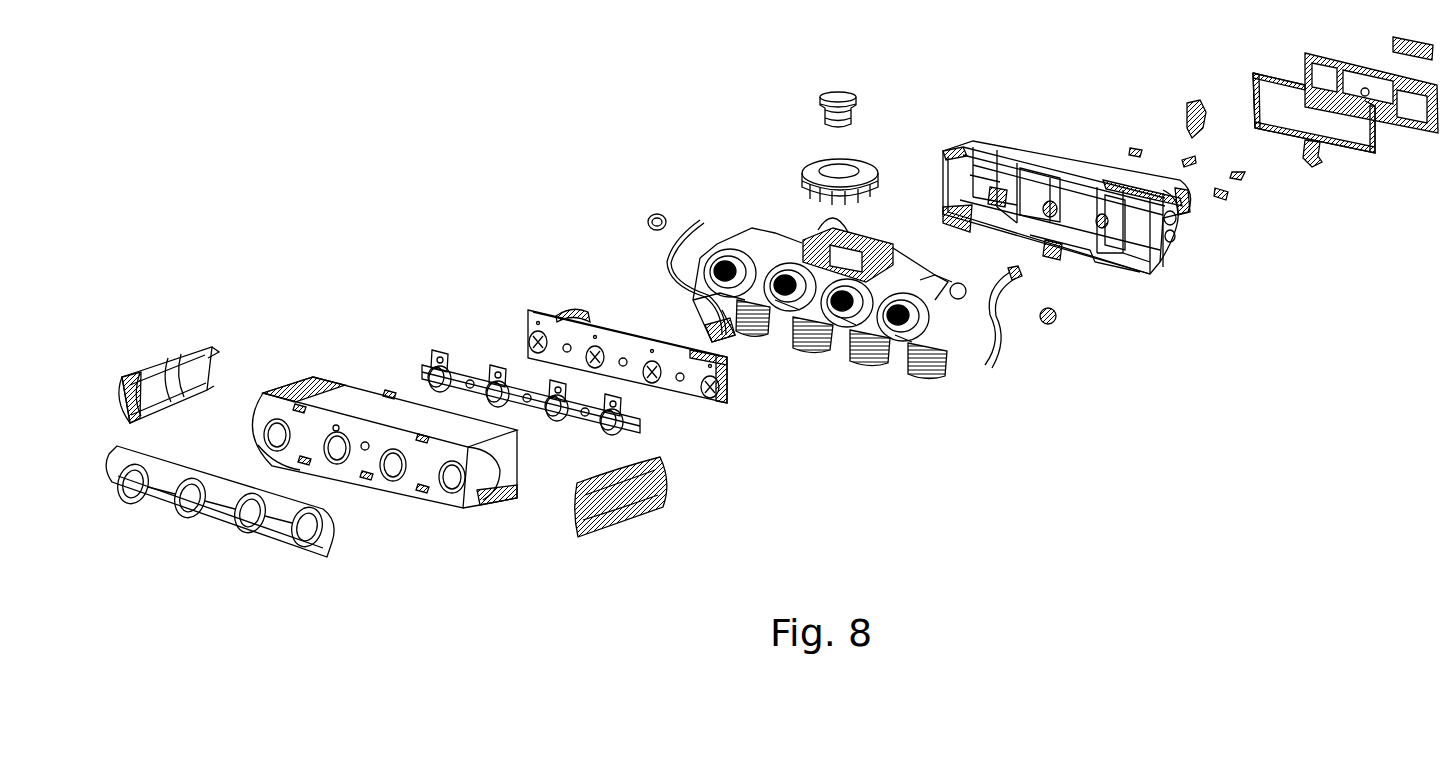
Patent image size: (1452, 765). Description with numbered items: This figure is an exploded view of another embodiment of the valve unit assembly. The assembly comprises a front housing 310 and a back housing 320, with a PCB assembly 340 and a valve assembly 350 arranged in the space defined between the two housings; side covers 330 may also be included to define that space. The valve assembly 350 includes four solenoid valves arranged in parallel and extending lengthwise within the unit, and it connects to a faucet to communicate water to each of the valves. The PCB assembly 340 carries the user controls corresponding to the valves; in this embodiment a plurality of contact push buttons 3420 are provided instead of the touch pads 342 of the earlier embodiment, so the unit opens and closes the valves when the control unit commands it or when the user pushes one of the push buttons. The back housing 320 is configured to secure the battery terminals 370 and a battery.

The front housing 310 is at (393, 487).
The back housing 320 is at (1008, 148).
The side covers 330 is at (163, 362).
The PCB assembly 340 is at (523, 320).
The PCB touch pads 342 is at (430, 358).
The contact push buttons 3420 is at (428, 377).
The valve assembly 350 is at (937, 367).
The battery terminals 370 is at (1183, 120).